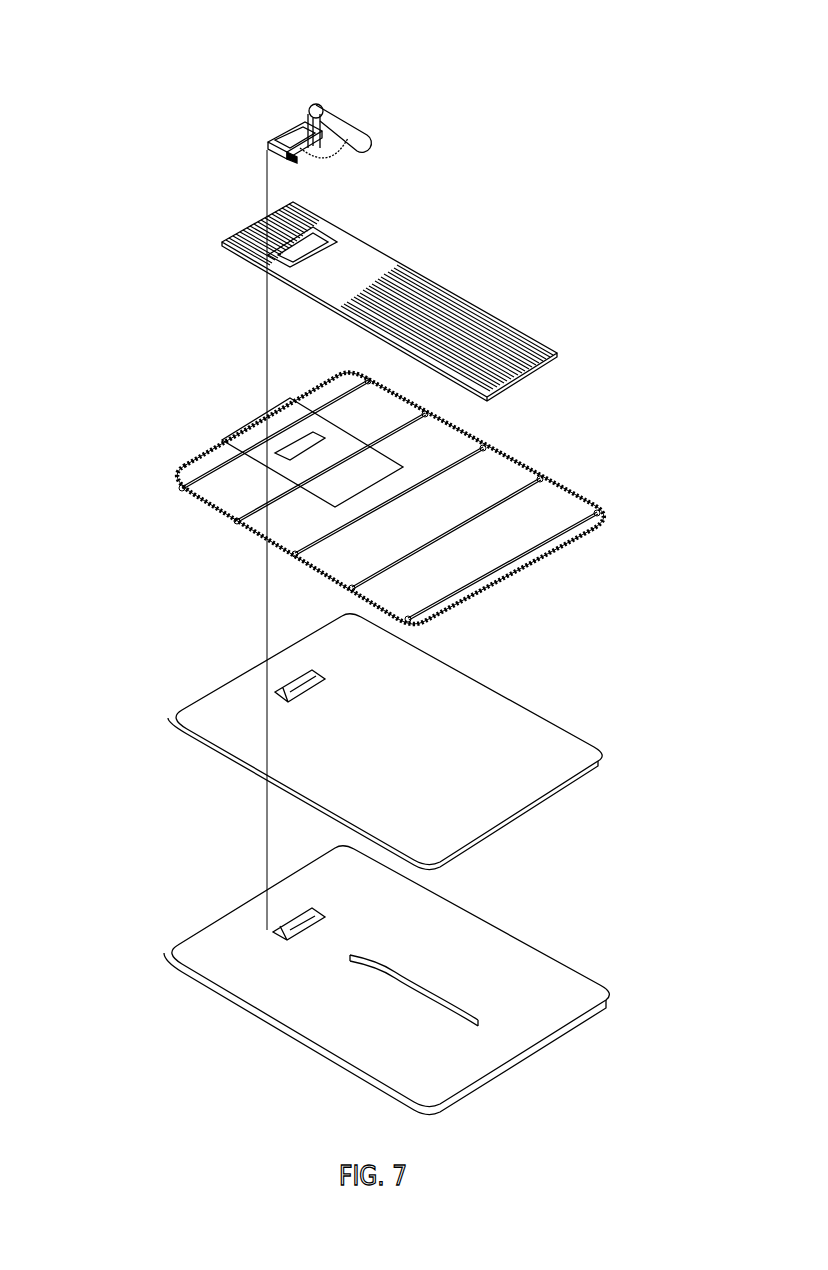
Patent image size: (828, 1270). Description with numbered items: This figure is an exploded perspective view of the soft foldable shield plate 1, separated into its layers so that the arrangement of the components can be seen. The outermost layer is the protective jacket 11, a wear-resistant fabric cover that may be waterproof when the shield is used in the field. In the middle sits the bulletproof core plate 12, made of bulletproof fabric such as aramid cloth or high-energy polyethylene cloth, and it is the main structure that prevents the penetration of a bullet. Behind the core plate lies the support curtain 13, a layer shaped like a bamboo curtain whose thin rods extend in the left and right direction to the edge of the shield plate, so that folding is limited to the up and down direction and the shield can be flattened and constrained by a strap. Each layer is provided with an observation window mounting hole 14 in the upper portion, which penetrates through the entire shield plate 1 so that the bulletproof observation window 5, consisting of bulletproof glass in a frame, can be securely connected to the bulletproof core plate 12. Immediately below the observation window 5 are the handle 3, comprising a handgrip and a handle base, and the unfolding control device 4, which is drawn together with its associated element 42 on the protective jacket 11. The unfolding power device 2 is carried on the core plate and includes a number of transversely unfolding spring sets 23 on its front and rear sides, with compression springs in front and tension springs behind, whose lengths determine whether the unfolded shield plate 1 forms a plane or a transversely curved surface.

The shield plate 1 is at (628, 348).
The unfolding power device 2 is at (390, 528).
The handle 3 is at (290, 152).
The unfolding control device 4 is at (308, 130).
The bulletproof observation window 5 is at (292, 134).
The protective jacket 11 is at (513, 1020).
The bulletproof core plate 12 is at (463, 792).
The support curtain 13 is at (375, 263).
The observation window mounting hole 14 is at (292, 256).
The transversely unfolding spring sets 23 is at (440, 603).
The strap 42 is at (372, 970).